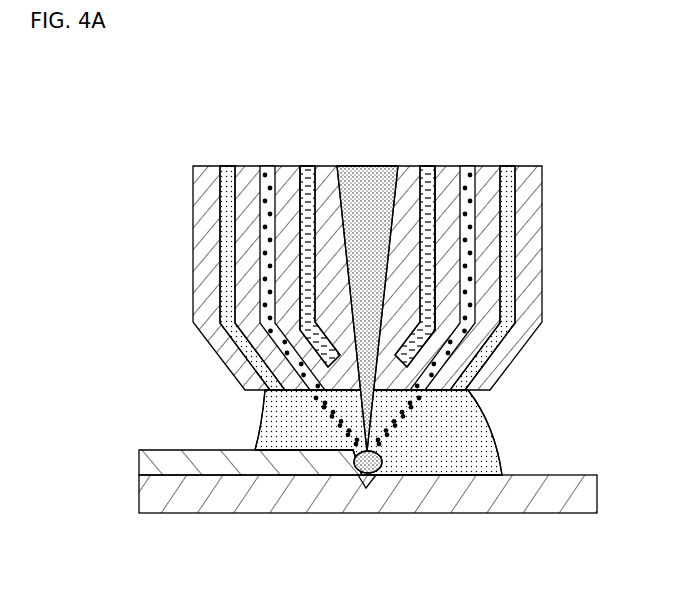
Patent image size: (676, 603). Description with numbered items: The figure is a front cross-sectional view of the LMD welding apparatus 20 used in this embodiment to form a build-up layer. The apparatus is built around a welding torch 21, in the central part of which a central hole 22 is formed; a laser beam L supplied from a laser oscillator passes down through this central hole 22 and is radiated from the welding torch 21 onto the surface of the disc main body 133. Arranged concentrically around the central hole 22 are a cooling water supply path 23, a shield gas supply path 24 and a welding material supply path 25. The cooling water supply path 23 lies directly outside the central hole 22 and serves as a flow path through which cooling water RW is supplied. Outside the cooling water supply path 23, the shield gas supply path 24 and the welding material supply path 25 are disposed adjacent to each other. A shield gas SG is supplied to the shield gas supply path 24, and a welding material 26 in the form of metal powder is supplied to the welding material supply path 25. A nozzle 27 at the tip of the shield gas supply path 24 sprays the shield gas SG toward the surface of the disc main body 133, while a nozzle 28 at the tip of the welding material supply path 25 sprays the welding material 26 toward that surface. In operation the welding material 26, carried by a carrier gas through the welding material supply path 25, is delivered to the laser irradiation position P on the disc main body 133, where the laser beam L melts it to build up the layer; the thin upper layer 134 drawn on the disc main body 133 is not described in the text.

The LMD welding apparatus 20 is at (173, 118).
The welding torch 21 is at (542, 242).
The central hole 22 is at (380, 167).
The cooling water supply path 23 is at (300, 228).
The shield gas supply path 24 is at (230, 277).
The welding material supply path 25 is at (265, 300).
The welding material 26 is at (327, 425).
The nozzle 27 is at (462, 393).
The nozzle 28 is at (413, 393).
The disc main body 133 is at (525, 515).
The upper plate 134 is at (153, 463).
The laser beam L is at (350, 167).
The cooling water RW is at (300, 190).
The shield gas SG is at (265, 248).
The laser irradiation position P is at (365, 472).